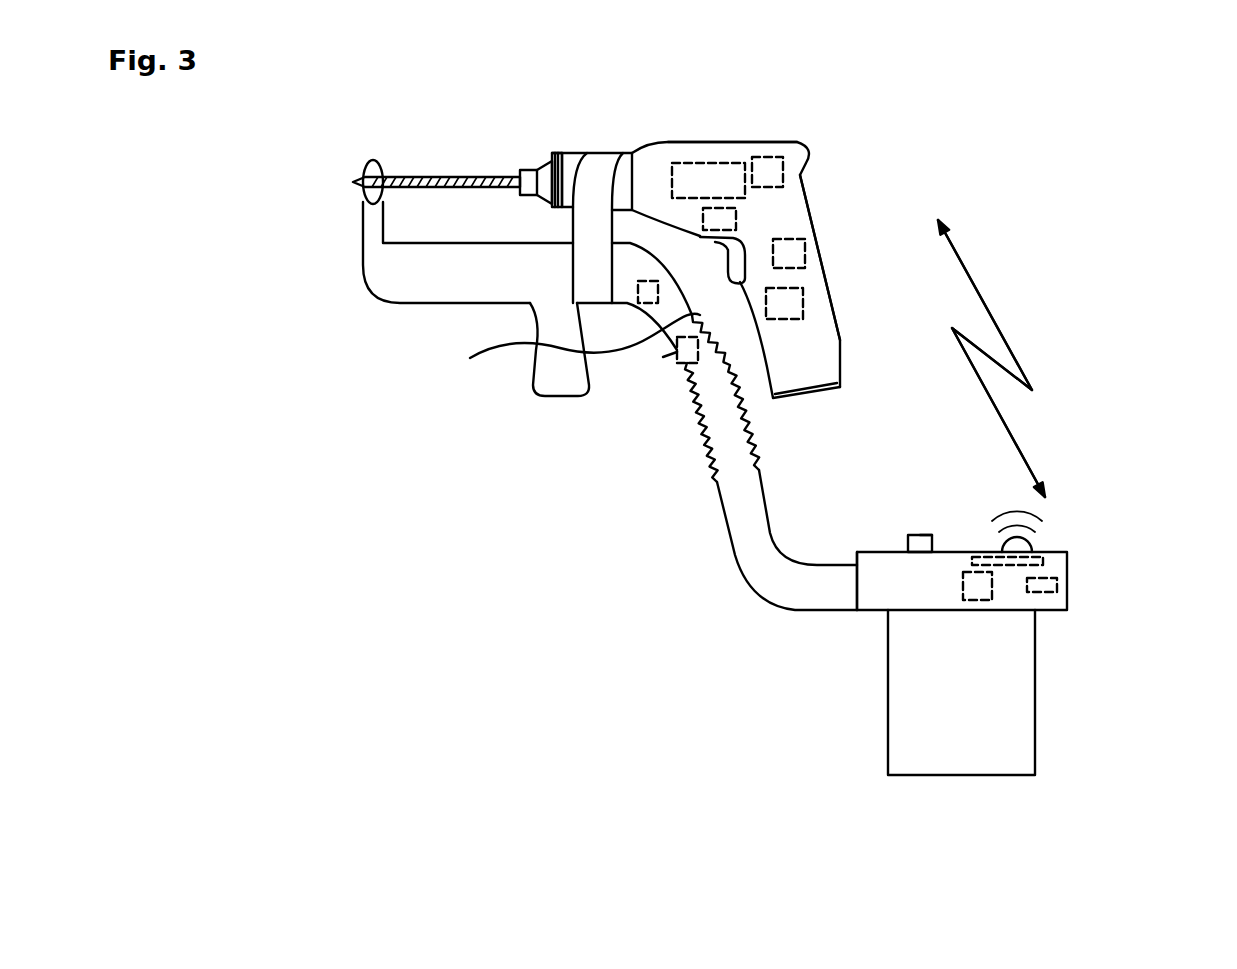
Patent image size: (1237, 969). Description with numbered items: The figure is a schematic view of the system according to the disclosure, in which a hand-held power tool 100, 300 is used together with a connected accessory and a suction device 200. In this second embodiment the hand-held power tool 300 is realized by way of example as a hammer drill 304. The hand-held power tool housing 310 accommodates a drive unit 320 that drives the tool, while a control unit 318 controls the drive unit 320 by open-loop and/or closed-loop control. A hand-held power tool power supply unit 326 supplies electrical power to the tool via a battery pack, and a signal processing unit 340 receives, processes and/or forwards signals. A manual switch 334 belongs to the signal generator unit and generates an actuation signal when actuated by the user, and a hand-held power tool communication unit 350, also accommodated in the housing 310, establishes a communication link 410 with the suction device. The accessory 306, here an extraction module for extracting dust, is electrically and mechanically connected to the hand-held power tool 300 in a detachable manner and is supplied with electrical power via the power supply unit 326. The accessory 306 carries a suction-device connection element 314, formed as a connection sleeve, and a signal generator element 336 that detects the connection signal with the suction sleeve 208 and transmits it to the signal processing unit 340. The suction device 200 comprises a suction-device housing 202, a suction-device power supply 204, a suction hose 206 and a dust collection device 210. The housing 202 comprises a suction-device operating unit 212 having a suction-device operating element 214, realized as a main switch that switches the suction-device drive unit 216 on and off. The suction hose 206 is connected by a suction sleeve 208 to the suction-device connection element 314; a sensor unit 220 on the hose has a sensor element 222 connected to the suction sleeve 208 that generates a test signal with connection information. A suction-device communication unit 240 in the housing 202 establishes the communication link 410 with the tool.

The hand-held power tool 100 is at (204, 212).
The accessory 306 is at (326, 246).
The hand-held power tool 300 is at (843, 149).
The hammer drill 304 is at (820, 257).
The hand-held power tool housing 310 is at (793, 196).
The drive unit 320 is at (702, 160).
The control unit 318 is at (767, 158).
The hand-held power tool communication unit 350 is at (737, 212).
The signal processing unit 340 is at (806, 257).
The hand-held power tool power supply unit 326 is at (803, 307).
The manual switch 334 is at (733, 270).
The signal generator element 336 is at (638, 283).
The suction-device connection element 314 is at (565, 344).
The sensor unit 220 is at (656, 370).
The sensor element 222 is at (686, 388).
The suction sleeve 208 is at (745, 422).
The suction hose 206 is at (775, 583).
The suction-device housing 202 is at (882, 565).
The suction-device operating element 214 is at (920, 538).
The suction-device operating unit 212 is at (938, 514).
The suction-device communication unit 240 is at (1043, 562).
The suction-device power supply 204 is at (1057, 585).
The suction-device drive unit 216 is at (968, 600).
The dust collection device 210 is at (1022, 738).
The suction device 200 is at (1143, 660).
The communication link 410 is at (980, 293).